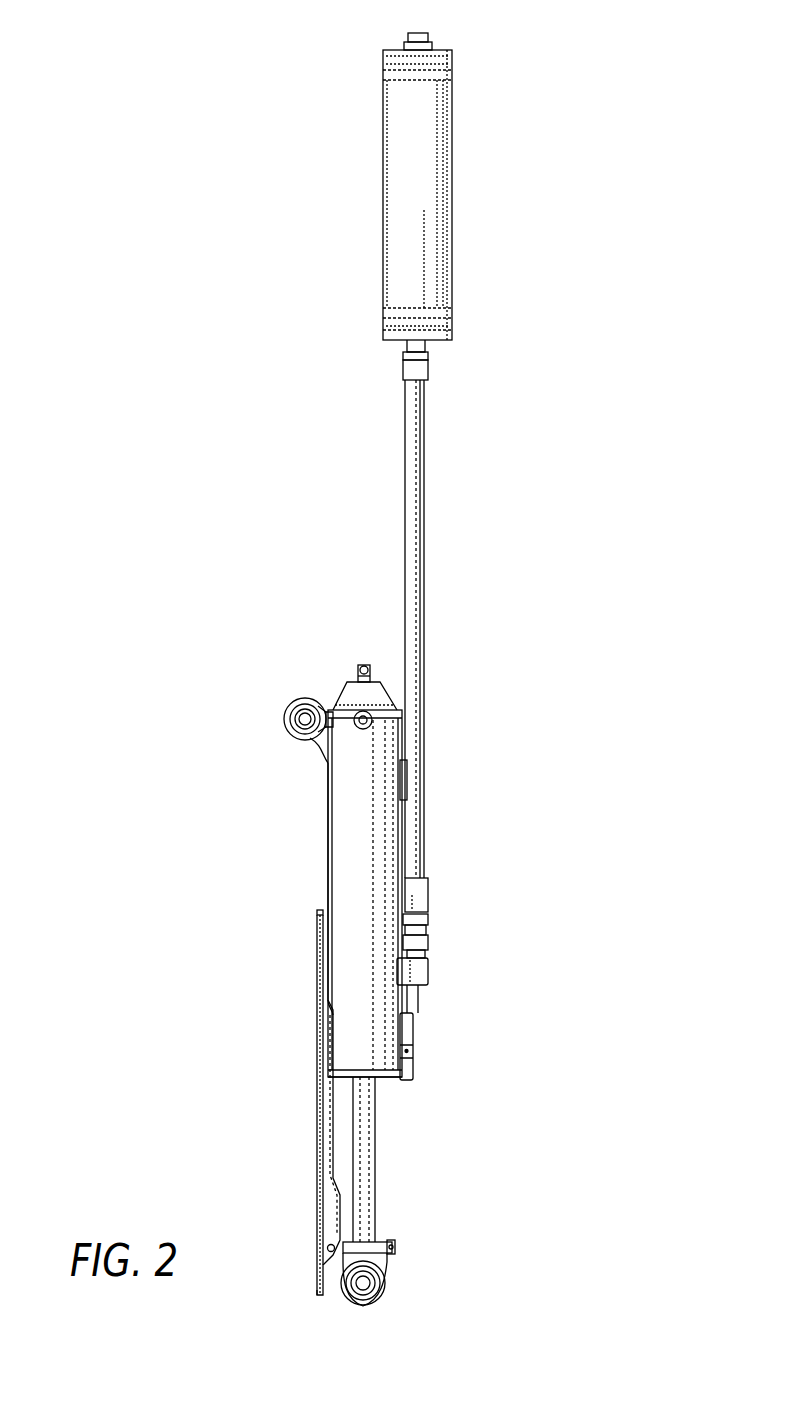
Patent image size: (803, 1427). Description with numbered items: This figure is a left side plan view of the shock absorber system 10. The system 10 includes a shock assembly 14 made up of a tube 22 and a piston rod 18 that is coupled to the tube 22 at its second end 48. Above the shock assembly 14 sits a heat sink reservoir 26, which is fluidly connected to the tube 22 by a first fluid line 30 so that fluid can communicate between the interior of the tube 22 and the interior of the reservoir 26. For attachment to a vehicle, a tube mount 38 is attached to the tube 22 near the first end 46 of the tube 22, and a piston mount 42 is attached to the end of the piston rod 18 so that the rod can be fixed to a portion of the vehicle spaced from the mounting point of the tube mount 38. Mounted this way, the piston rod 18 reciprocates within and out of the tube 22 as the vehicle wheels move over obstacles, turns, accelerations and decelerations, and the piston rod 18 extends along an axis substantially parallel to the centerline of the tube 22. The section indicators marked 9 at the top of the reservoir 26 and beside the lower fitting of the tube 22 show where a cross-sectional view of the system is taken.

The section line 9 is at (417, 33).
The shock absorber system 10 is at (583, 105).
The shock assembly 14 is at (265, 1145).
The piston rod 18 is at (372, 1125).
The tube 22 is at (350, 860).
The heat sink reservoir 26 is at (400, 185).
The first fluid line 30 is at (418, 552).
The tube mount 38 is at (283, 712).
The piston mount 42 is at (388, 1285).
The first end 46 is at (400, 682).
The second end 48 is at (305, 1068).